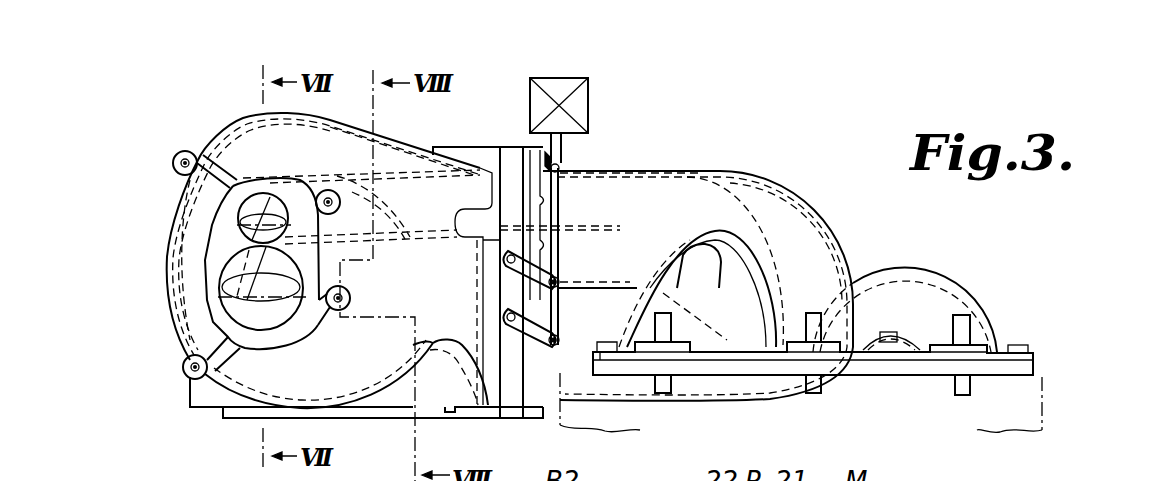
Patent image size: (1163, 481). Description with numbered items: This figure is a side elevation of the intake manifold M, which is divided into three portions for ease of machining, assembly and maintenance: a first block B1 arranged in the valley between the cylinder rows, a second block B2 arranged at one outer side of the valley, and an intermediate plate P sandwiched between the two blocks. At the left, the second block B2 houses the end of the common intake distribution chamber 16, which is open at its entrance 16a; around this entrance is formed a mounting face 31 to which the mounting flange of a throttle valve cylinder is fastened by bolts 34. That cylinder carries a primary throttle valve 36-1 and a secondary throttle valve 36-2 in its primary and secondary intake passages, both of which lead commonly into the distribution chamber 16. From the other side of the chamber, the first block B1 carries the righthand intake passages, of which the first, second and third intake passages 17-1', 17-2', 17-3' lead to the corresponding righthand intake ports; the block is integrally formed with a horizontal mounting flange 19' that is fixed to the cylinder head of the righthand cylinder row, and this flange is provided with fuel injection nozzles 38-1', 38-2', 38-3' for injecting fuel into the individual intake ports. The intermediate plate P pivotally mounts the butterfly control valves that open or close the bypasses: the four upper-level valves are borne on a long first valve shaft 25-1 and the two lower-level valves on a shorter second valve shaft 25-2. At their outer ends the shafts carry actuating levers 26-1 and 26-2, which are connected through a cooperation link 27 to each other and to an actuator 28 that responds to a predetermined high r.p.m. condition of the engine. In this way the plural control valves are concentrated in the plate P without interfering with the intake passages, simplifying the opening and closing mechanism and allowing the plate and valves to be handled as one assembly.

The intake distribution chamber 16 is at (328, 331).
The entrance 16a is at (250, 238).
The mounting face 31 is at (205, 262).
The bolts 34 is at (350, 298).
The primary throttle valve 36-1 is at (290, 230).
The secondary throttle valve 36-2 is at (233, 305).
The second block B2 is at (407, 148).
The first block B1 is at (632, 170).
The intermediate plate P is at (511, 150).
The intake manifold M is at (706, 170).
The actuator 28 is at (552, 78).
The cooperation link 27 is at (559, 202).
The first valve shaft 25-1 is at (509, 259).
The second valve shaft 25-2 is at (509, 317).
The actuating lever 26-1 is at (538, 272).
The actuating lever 26-2 is at (545, 334).
The third intake passage at the righthand side 17-3' is at (753, 244).
The second intake passage at the righthand side 17-2' is at (801, 243).
The first intake passage at the righthand side 17-1' is at (905, 293).
The mounting flange 19' is at (815, 387).
The fuel injection nozzle 38-3' is at (675, 381).
The fuel injection nozzle 38-2' is at (819, 381).
The fuel injection nozzle 38-1' is at (950, 375).